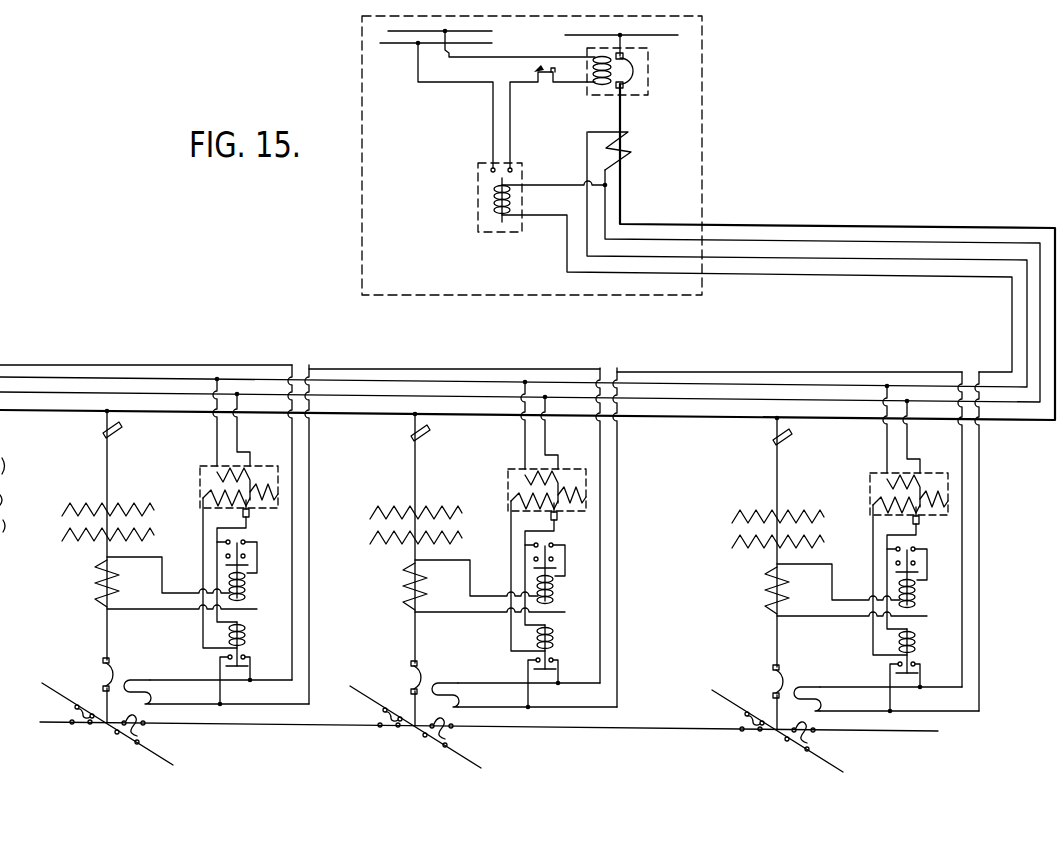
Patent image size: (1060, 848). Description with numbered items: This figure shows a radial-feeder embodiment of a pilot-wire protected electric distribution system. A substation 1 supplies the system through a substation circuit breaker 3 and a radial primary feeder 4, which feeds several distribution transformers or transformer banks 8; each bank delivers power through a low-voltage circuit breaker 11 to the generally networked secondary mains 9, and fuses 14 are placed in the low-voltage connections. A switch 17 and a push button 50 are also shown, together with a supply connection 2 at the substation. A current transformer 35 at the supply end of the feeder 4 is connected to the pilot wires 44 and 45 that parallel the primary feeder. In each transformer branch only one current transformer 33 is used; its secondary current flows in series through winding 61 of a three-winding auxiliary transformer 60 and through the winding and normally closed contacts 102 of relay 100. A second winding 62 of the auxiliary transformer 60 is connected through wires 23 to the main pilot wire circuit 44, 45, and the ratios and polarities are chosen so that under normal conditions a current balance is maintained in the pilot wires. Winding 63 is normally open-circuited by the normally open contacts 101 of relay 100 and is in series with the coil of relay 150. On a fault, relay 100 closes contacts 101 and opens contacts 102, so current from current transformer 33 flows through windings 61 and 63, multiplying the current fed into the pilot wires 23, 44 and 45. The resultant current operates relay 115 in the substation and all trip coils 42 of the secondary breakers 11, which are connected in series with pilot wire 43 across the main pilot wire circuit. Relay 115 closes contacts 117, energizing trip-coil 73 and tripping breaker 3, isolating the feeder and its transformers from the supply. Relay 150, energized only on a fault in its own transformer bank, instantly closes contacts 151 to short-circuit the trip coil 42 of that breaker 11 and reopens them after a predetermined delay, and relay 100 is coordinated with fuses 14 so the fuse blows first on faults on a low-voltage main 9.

The substation 1 is at (705, 141).
The supply line 2 is at (668, 35).
The substation circuit breaker 3 is at (617, 81).
The radial primary feeder 4 is at (878, 227).
The distribution transformer 8 is at (66, 522).
The secondary mains 9 is at (336, 726).
The low-voltage circuit breaker 11 is at (104, 679).
The fuse 14 is at (70, 714).
The switch 17 is at (112, 430).
The wires 23 is at (237, 441).
The current transformer 33 is at (98, 604).
The current transformer 35 is at (623, 144).
The trip coil 42 is at (143, 691).
The pilot wire 43 is at (849, 278).
The pilot wire 44 is at (778, 244).
The pilot wire 45 is at (808, 261).
The push-button switch 50 is at (531, 77).
The three-winding auxiliary transformer 60 is at (267, 465).
The winding 61 is at (265, 482).
The second winding 62 is at (214, 473).
The winding 63 is at (205, 499).
The trip-coil 73 is at (593, 54).
The relay 100 is at (242, 597).
The normally open contacts 101 is at (224, 556).
The normally closed contacts 102 is at (224, 541).
The relay 115 is at (494, 202).
The contacts 117 is at (489, 167).
The relay 150 is at (244, 636).
The normally open contacts 151 is at (224, 659).